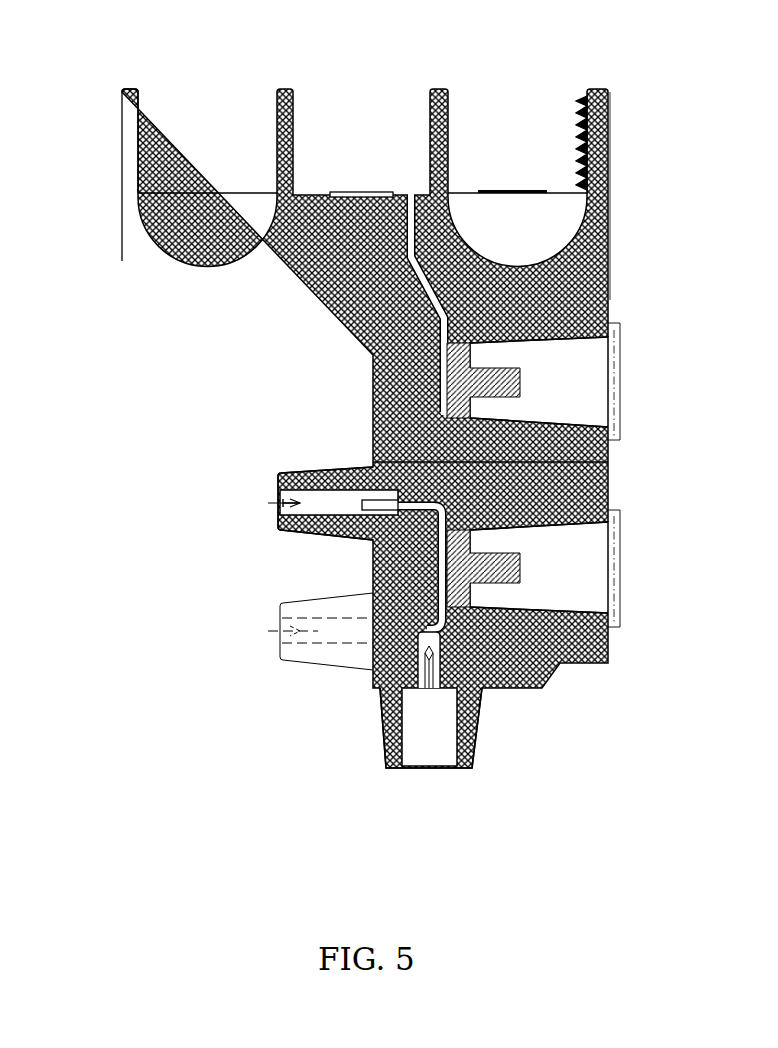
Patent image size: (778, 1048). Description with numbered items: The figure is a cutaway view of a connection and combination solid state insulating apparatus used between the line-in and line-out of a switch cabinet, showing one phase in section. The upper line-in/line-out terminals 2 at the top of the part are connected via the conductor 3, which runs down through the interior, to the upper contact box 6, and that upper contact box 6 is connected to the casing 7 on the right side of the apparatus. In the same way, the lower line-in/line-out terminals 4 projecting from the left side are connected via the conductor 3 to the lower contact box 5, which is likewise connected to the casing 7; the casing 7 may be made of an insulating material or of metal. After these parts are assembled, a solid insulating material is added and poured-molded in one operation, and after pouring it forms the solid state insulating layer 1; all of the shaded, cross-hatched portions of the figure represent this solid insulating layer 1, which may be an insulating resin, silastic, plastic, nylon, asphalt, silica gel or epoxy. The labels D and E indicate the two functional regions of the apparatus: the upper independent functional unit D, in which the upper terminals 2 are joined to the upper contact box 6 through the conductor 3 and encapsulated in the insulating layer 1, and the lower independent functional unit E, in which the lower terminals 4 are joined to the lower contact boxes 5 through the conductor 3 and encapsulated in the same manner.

The solid state insulating layer 1 is at (540, 270).
The upper line-in/line-out terminals 2 is at (364, 193).
The conductor 3 is at (423, 283).
The lower line-in/line-out terminals 4 is at (280, 502).
The lower contact boxes 5 is at (607, 613).
The upper contact boxes 6 is at (605, 428).
The casing 7 is at (608, 298).
The upper independent functional unit D is at (121, 150).
The lower independent functional unit E is at (385, 690).